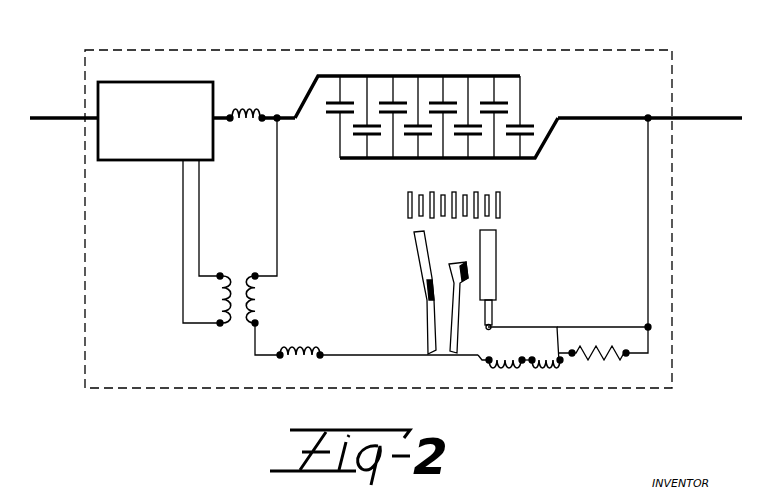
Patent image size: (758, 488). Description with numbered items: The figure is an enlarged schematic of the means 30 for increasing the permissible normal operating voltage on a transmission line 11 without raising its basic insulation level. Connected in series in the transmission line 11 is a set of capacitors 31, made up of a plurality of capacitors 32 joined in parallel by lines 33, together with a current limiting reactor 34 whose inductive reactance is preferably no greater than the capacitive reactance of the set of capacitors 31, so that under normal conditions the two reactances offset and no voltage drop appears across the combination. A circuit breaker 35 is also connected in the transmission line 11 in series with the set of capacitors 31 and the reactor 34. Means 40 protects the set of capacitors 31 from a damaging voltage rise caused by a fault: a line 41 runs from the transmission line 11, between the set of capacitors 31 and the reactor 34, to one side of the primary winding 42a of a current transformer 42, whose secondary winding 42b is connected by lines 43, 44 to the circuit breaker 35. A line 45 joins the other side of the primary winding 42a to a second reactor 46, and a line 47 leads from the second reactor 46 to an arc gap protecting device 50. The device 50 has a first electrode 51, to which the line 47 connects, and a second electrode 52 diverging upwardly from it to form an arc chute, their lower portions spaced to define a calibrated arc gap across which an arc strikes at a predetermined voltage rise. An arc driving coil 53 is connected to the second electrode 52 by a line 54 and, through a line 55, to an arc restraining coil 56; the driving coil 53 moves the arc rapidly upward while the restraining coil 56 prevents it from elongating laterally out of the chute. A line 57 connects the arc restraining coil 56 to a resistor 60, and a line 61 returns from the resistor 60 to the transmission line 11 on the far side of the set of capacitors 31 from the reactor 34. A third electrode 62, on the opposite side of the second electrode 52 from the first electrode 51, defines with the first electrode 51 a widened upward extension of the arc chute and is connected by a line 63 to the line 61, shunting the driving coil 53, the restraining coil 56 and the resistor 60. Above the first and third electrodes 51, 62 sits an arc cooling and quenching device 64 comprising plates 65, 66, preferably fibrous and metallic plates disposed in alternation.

The transmission line 11 is at (60, 117).
The means for increasing the permissible normal operating voltage 30 is at (458, 52).
The set of capacitors 31 is at (437, 115).
The capacitors 32 is at (443, 102).
The lines 33 is at (328, 103).
The current limiting reactor 34 is at (258, 68).
The circuit breaker 35 is at (172, 82).
The means for protecting the set of capacitors 40 is at (655, 278).
The line 41 is at (278, 195).
The current transformer 42 is at (226, 277).
The primary winding 42a is at (258, 296).
The secondary winding 42b is at (222, 300).
The line 43 is at (199, 197).
The line 44 is at (183, 196).
The line 45 is at (248, 351).
The second reactor 46 is at (310, 318).
The line 47 is at (384, 354).
The arc gap protecting device 50 is at (409, 292).
The first electrode 51 is at (429, 308).
The second electrode 52 is at (456, 311).
The arc driving coil 53 is at (505, 378).
The line 54 is at (478, 355).
The line 55 is at (530, 344).
The arc restraining coil 56 is at (545, 378).
The line 57 is at (557, 327).
The resistor 60 is at (610, 347).
The line 61 is at (648, 230).
The third electrode 62 is at (493, 252).
The line 63 is at (610, 326).
The arc cooling and quenching device 64 is at (495, 211).
The plates 65 is at (498, 192).
The plates 66 is at (487, 216).